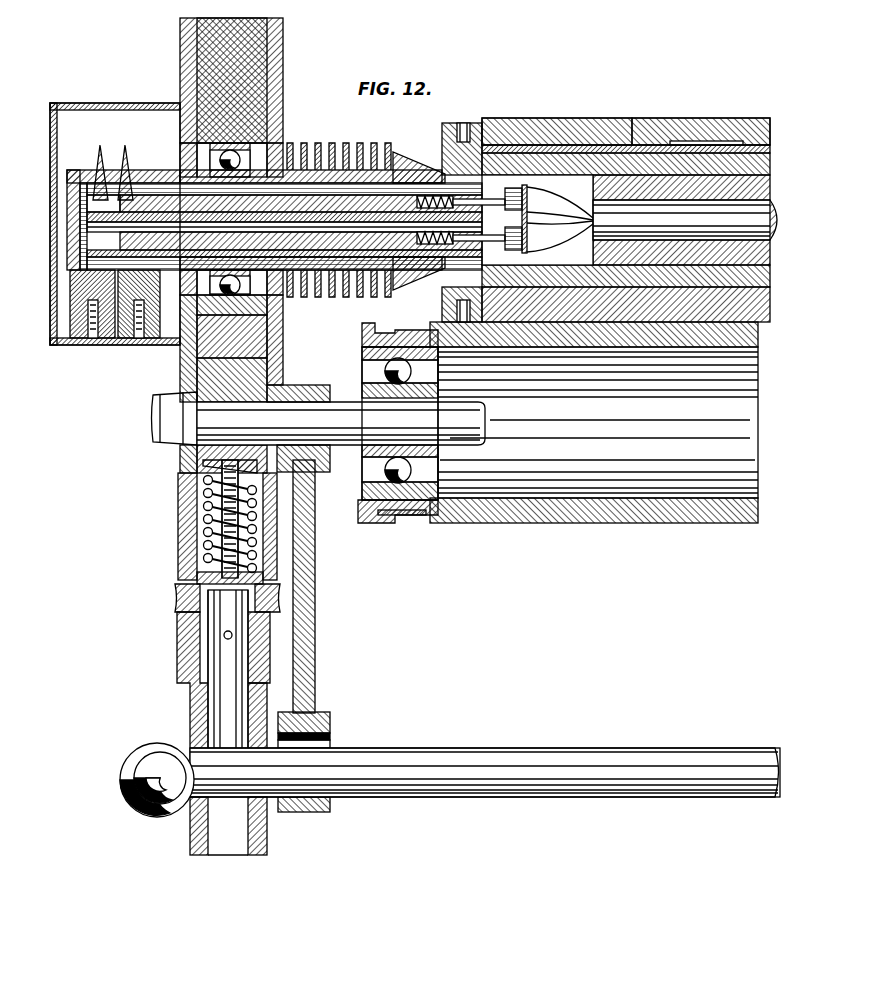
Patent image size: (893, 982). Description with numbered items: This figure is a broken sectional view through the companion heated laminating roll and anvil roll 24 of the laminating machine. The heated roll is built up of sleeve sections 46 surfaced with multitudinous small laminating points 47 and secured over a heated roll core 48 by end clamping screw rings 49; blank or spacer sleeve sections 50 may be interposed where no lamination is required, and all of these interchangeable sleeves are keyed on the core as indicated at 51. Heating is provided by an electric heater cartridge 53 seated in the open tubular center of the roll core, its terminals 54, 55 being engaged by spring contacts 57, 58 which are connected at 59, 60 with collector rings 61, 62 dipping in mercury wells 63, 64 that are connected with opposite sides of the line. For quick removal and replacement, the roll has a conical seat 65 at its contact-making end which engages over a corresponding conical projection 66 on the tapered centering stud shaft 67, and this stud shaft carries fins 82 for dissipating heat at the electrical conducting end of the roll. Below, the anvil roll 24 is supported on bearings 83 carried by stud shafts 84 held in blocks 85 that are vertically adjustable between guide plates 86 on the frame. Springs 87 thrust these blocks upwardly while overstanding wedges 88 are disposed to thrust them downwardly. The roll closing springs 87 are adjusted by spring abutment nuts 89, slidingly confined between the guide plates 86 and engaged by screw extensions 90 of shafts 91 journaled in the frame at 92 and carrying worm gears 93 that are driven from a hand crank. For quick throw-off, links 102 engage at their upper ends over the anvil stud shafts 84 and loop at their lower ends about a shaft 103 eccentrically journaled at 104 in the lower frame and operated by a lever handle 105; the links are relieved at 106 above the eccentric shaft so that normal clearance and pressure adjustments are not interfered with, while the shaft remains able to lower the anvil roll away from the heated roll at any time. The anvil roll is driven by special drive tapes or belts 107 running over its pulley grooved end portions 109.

The anvil roll 24 is at (520, 523).
The sleeve sections 46 is at (624, 136).
The laminating points 47 is at (596, 119).
The heated roll core 48 is at (655, 165).
The end clamping screw rings 49 is at (470, 124).
The blank or spacer sleeve sections 50 is at (705, 126).
The key 51 is at (764, 150).
The electric heater cartridge 53 is at (773, 210).
The terminal 54 is at (528, 190).
The terminal 55 is at (528, 246).
The spring contact 57 is at (510, 200).
The spring contact 58 is at (511, 240).
The connection 59 is at (133, 173).
The connection 60 is at (75, 252).
The collector ring 61 is at (101, 148).
The collector ring 62 is at (128, 152).
The mercury well 63 is at (93, 336).
The mercury well 64 is at (131, 336).
The conical seat 65 is at (446, 170).
The conical projection 66 is at (447, 280).
The stud shaft 67 is at (352, 143).
The fins 82 is at (326, 143).
The bearings 83 is at (425, 388).
The stud shafts 84 is at (470, 418).
The blocks 85 is at (250, 372).
The guide plates 86 is at (272, 342).
The springs 87 is at (205, 522).
The wedges 88 is at (255, 330).
The spring abutment nuts 89 is at (200, 577).
The screw extensions 90 is at (222, 497).
The shafts 91 is at (228, 701).
The journal 92 is at (205, 727).
The worm gears 93 is at (178, 601).
The links 102 is at (310, 640).
The shaft 103 is at (530, 766).
The eccentric journal 104 is at (246, 798).
The lever handle 105 is at (128, 795).
The relief 106 is at (327, 738).
The drive tapes or belts 107 is at (395, 516).
The pulley grooved end portions 109 is at (374, 524).